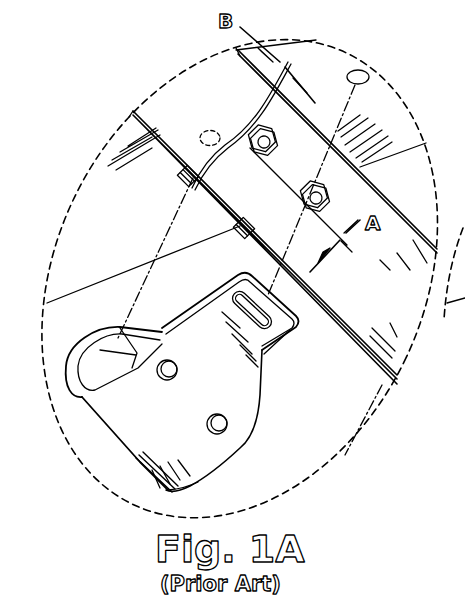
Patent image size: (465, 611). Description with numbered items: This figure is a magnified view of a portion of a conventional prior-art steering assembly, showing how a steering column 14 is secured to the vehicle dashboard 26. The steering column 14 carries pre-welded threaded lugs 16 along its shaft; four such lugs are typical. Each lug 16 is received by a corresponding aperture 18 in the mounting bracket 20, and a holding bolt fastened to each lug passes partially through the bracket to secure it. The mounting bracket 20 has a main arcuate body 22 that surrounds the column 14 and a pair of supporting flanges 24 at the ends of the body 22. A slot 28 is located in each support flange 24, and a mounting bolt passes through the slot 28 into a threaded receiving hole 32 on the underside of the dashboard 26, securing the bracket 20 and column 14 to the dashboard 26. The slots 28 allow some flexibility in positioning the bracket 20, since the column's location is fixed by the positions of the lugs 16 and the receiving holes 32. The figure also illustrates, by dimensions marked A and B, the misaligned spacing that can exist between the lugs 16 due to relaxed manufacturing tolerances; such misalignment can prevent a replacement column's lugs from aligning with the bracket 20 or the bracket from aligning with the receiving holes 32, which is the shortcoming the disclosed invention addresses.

The steering column 14 is at (392, 217).
The pre-welded threaded lugs 16 is at (188, 180).
The apertures 18 is at (167, 360).
The mounting bracket 20 is at (254, 393).
The main arcuate body 22 is at (190, 483).
The supporting flanges 24 is at (108, 330).
The dashboard 26 is at (382, 107).
The slot 28 is at (262, 311).
The threaded receiving hole 32 is at (370, 77).